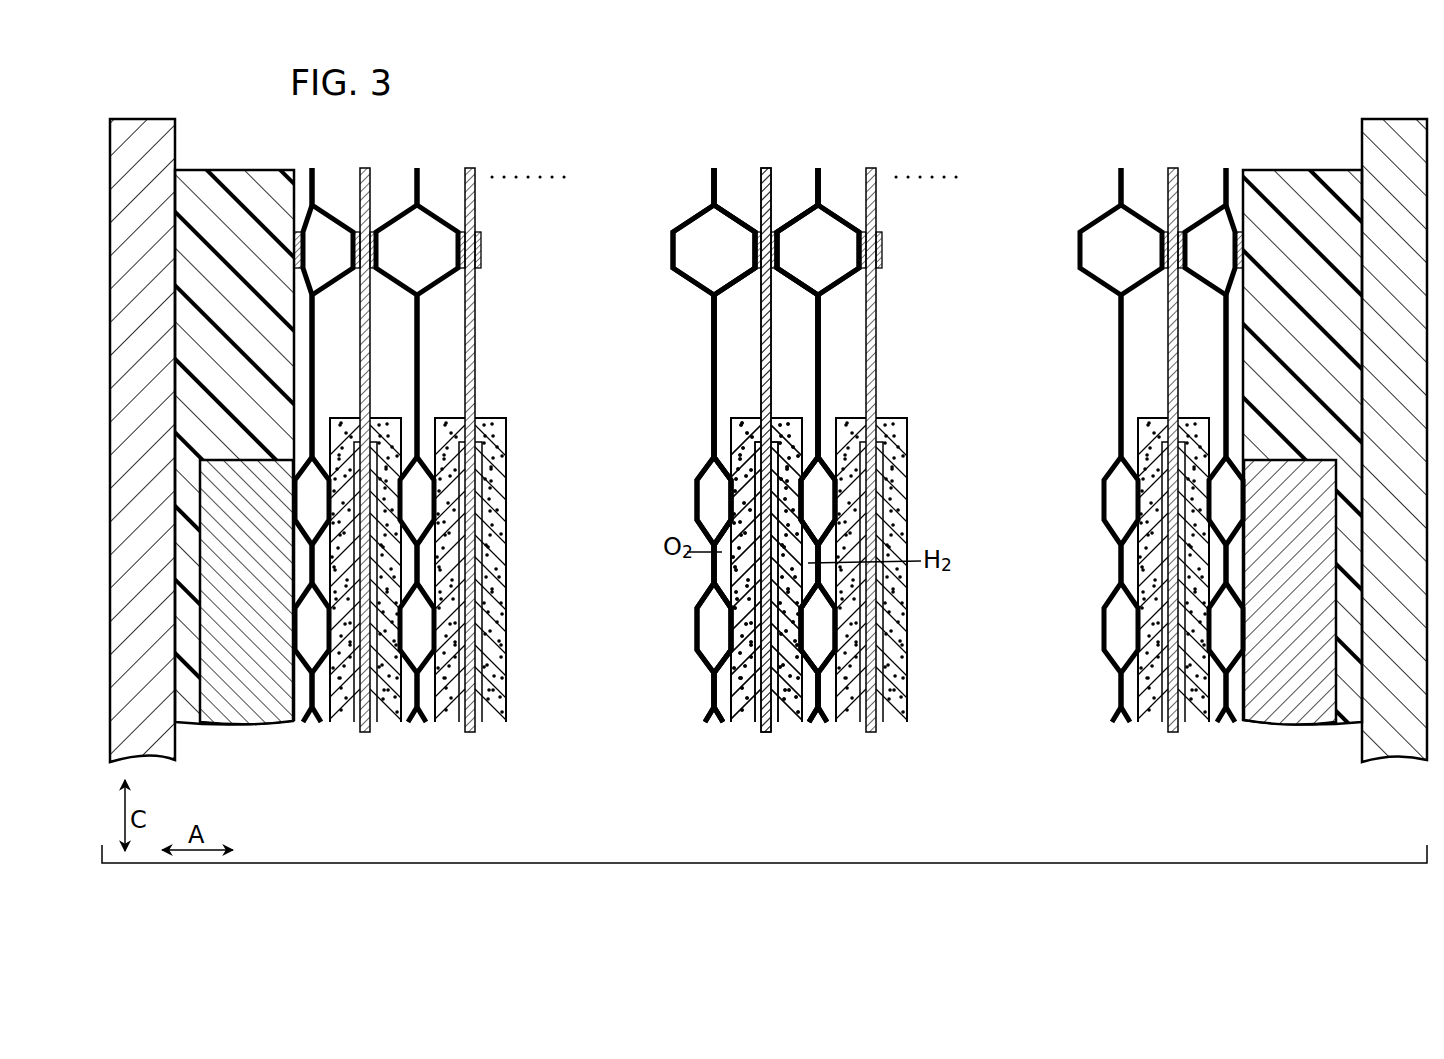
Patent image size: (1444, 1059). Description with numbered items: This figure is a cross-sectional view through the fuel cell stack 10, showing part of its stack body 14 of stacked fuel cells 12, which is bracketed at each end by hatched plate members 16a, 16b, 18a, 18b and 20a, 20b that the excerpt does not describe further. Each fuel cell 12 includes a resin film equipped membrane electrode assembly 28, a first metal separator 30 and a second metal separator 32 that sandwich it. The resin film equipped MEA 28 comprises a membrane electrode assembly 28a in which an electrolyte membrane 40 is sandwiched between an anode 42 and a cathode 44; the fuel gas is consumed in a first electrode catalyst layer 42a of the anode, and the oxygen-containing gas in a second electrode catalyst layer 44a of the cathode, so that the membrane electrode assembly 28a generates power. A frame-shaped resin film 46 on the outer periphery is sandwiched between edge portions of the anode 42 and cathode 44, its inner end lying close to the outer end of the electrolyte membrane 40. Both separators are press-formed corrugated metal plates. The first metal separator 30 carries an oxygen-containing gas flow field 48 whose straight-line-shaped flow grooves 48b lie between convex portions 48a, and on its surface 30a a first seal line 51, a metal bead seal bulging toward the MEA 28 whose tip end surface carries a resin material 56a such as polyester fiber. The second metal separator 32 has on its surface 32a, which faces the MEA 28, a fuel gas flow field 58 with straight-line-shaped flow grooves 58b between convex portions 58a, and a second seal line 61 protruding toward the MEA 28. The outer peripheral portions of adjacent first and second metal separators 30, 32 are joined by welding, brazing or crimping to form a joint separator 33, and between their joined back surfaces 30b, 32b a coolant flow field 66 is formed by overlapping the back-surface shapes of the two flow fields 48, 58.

The fuel cell stack 10 is at (524, 107).
The fuel cell 12 is at (853, 813).
The stack body 14 is at (722, 851).
The terminal plate 16a is at (222, 703).
The terminal plate 16b is at (1316, 710).
The insulator 18a is at (212, 167).
The insulator 18b is at (1328, 167).
The end plate 20a is at (137, 116).
The end plate 20b is at (1402, 116).
The resin film equipped membrane electrode assembly 28 is at (825, 783).
The membrane electrode assembly 28a is at (731, 704).
The first metal separator 30 is at (735, 218).
The surface 30a is at (730, 283).
The back surface 30b is at (736, 268).
The second metal separator 32 is at (688, 217).
The surface 32a is at (700, 602).
The back surface 32b is at (711, 615).
The joint separator 33 is at (752, 126).
The electrolyte membrane 40 is at (767, 734).
The anode 42 is at (790, 728).
The first electrode catalyst layer 42a is at (806, 615).
The cathode 44 is at (748, 728).
The second electrode catalyst layer 44a is at (757, 490).
The resin film 46 is at (772, 290).
The oxygen-containing gas flow field 48 is at (714, 688).
The convex portion 48a is at (745, 507).
The straight-line-shaped flow groove 48b is at (725, 563).
The first seal line 51 is at (764, 243).
The resin material 56a is at (767, 250).
The fuel gas flow field 58 is at (815, 687).
The convex portion 58a is at (812, 508).
The straight-line-shaped flow groove 58b is at (808, 574).
The second seal line 61 is at (758, 262).
The coolant flow field 66 is at (722, 503).